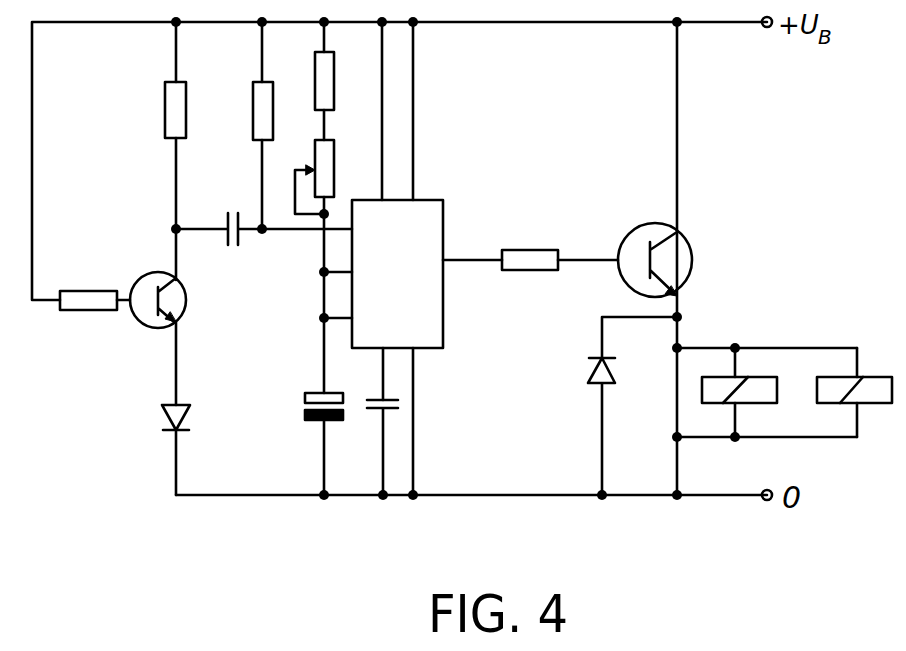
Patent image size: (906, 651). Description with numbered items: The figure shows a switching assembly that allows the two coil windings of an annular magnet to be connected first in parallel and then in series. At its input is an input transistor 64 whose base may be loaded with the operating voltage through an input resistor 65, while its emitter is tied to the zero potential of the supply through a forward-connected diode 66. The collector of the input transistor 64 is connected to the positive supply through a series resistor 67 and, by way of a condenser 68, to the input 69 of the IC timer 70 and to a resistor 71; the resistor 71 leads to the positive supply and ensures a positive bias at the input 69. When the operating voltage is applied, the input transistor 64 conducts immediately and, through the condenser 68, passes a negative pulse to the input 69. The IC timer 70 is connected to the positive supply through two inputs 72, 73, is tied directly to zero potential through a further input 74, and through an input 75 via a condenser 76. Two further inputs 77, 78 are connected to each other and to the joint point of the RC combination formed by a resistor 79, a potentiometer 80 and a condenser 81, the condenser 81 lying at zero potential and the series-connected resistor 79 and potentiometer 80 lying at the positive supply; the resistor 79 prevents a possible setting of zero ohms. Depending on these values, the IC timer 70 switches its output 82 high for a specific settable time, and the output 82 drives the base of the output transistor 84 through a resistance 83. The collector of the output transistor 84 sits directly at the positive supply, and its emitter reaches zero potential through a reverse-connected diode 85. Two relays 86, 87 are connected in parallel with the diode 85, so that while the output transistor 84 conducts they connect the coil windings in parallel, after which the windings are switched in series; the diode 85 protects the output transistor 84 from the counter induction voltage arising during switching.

The input transistor 64 is at (136, 318).
The input resistor 65 is at (86, 312).
The diode 66 is at (164, 410).
The series resistor 67 is at (165, 97).
The condenser 68 is at (230, 214).
The input of the IC timer 69 is at (350, 232).
The IC timer 70 is at (430, 222).
The resistor 71 is at (255, 100).
The input of the IC timer 72 is at (382, 198).
The input of the IC timer 73 is at (415, 200).
The input of the IC timer 74 is at (420, 350).
The input of the IC timer 75 is at (386, 352).
The condenser 76 is at (374, 406).
The input of the IC timer 77 is at (350, 320).
The input of the IC timer 78 is at (350, 274).
The resistor 79 is at (318, 78).
The potentiometer 80 is at (332, 165).
The condenser 81 is at (311, 421).
The output of the IC timer 82 is at (446, 264).
The resistance 83 is at (532, 256).
The output transistor 84 is at (683, 250).
The diode 85 is at (590, 373).
The relay 86 is at (702, 385).
The relay 87 is at (875, 405).